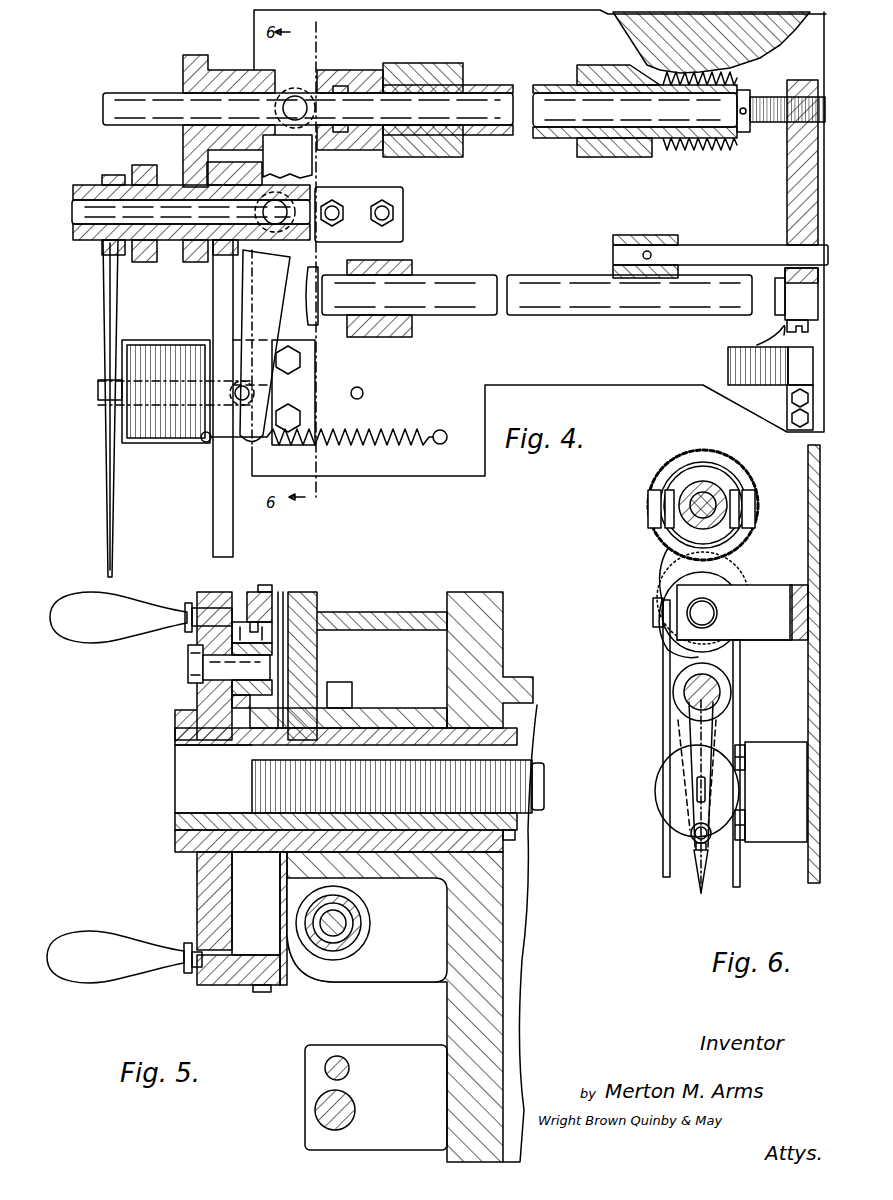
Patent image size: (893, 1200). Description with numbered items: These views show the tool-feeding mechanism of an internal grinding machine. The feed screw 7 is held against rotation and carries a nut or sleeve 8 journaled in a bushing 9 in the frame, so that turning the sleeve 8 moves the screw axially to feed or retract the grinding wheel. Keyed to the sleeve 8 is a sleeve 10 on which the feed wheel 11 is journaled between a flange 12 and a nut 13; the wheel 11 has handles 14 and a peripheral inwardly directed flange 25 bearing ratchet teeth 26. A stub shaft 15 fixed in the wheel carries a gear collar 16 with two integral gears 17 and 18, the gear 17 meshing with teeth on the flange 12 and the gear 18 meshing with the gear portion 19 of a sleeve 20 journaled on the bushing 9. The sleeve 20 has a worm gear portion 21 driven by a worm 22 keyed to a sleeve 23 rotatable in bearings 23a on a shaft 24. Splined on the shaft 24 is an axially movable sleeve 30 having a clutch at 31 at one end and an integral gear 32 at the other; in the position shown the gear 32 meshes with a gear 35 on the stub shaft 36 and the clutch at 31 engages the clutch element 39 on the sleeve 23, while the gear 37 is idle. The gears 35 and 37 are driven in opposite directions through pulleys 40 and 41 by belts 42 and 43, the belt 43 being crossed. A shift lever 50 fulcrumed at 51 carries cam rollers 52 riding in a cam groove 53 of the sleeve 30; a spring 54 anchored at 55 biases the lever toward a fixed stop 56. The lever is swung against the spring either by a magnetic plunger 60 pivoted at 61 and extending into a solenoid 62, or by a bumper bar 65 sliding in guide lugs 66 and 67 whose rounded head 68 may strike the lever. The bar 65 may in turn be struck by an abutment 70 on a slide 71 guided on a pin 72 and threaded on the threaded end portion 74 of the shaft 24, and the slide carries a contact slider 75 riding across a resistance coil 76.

In FIG. 5, the feed screw 7 is at (540, 780).
In FIG. 5, the nut or sleeve 8 is at (515, 740).
In FIG. 5, the bushing 9 is at (520, 840).
In FIG. 5, the sleeve 10 is at (178, 838).
In FIG. 5, the feed wheel 11 is at (205, 898).
In FIG. 5, the flange 12 is at (240, 870).
In FIG. 5, the nut 13 is at (178, 718).
In FIG. 5, the handle 14 is at (148, 608).
In FIG. 5, the stub shaft 15 is at (205, 658).
In FIG. 5, the gear collar 16 is at (262, 657).
In FIG. 5, the gear 17 is at (242, 625).
In FIG. 5, the gear 18 is at (300, 592).
In FIG. 5, the gear portion 19 is at (290, 700).
In FIG. 5, the sleeve 20 is at (345, 712).
In FIG. 4, the worm gear portion 21 is at (628, 35).
In FIG. 5, the worm gear portion 21 is at (345, 682).
In FIG. 4, the worm 22 is at (692, 150).
In FIG. 5, the worm 22 is at (365, 915).
In FIG. 4, the sleeve 23 is at (556, 85).
In FIG. 5, the sleeve 23 is at (350, 930).
In FIG. 4, the bearings 23a is at (440, 62).
In FIG. 4, the shaft 24 is at (558, 115).
In FIG. 5, the shaft 24 is at (320, 965).
In FIG. 6, the shaft 24 is at (712, 530).
In FIG. 5, the peripheral inwardly directed flange 25 is at (238, 985).
In FIG. 5, the ratchet teeth 26 is at (270, 585).
In FIG. 4, the axially movable sleeve 30 is at (262, 72).
In FIG. 4, the clutch 31 is at (356, 75).
In FIG. 4, the gear 32 is at (192, 62).
In FIG. 6, the gear 32 is at (725, 455).
In FIG. 4, the gear 35 is at (196, 265).
In FIG. 6, the gear 35 is at (745, 590).
In FIG. 4, the stub shaft 36 is at (78, 208).
In FIG. 6, the stub shaft 36 is at (712, 612).
In FIG. 4, the gear 37 is at (162, 258).
In FIG. 4, the clutch element 39 is at (375, 140).
In FIG. 4, the belt pulley 40 is at (226, 185).
In FIG. 6, the belt pulley 40 is at (740, 652).
In FIG. 4, the belt pulley 41 is at (114, 176).
In FIG. 4, the belt 42 is at (222, 498).
In FIG. 6, the belt 42 is at (662, 676).
In FIG. 4, the belt 43 is at (108, 502).
In FIG. 6, the belt 43 is at (696, 880).
In FIG. 4, the shift lever 50 is at (290, 166).
In FIG. 6, the shift lever 50 is at (665, 562).
In FIG. 4, the fulcrum 51 is at (262, 347).
In FIG. 6, the fulcrum 51 is at (656, 616).
In FIG. 4, the cam rollers 52 is at (340, 80).
In FIG. 6, the cam rollers 52 is at (670, 488).
In FIG. 4, the cam groove 53 is at (300, 95).
In FIG. 4, the spring 54 is at (400, 432).
In FIG. 6, the spring 54 is at (690, 838).
In FIG. 4, the spring anchorage 55 is at (445, 430).
In FIG. 4, the fixed stop 56 is at (360, 388).
In FIG. 4, the magnetic plunger 60 is at (96, 396).
In FIG. 6, the magnetic plunger 60 is at (712, 792).
In FIG. 4, the pivot 61 is at (250, 377).
In FIG. 4, the solenoid 62 is at (122, 364).
In FIG. 6, the solenoid 62 is at (655, 786).
In FIG. 4, the bumper bar 65 is at (536, 275).
In FIG. 5, the bumper bar 65 is at (318, 1118).
In FIG. 6, the bumper bar 65 is at (718, 688).
In FIG. 4, the guide lug 66 is at (410, 262).
In FIG. 4, the guide lug 67 is at (618, 236).
In FIG. 5, the guide lug 67 is at (410, 1058).
In FIG. 4, the rounded head 68 is at (292, 344).
In FIG. 6, the rounded head 68 is at (675, 706).
In FIG. 4, the abutment 70 is at (780, 275).
In FIG. 4, the slide 71 is at (786, 160).
In FIG. 4, the pin 72 is at (700, 245).
In FIG. 5, the pin 72 is at (345, 1058).
In FIG. 4, the threaded end portion 74 is at (782, 92).
In FIG. 4, the contact slider 75 is at (775, 340).
In FIG. 4, the resistance coil 76 is at (728, 363).